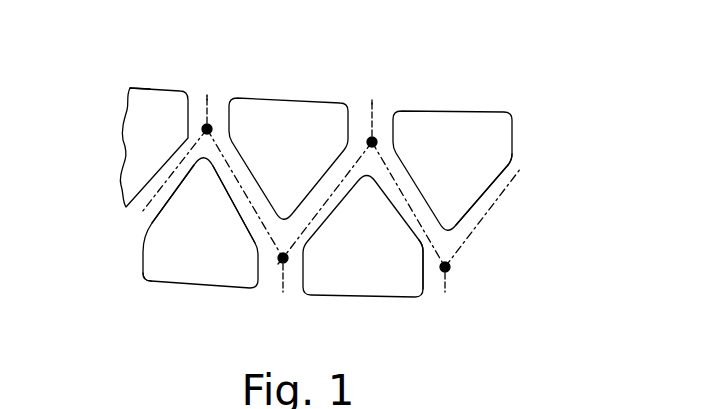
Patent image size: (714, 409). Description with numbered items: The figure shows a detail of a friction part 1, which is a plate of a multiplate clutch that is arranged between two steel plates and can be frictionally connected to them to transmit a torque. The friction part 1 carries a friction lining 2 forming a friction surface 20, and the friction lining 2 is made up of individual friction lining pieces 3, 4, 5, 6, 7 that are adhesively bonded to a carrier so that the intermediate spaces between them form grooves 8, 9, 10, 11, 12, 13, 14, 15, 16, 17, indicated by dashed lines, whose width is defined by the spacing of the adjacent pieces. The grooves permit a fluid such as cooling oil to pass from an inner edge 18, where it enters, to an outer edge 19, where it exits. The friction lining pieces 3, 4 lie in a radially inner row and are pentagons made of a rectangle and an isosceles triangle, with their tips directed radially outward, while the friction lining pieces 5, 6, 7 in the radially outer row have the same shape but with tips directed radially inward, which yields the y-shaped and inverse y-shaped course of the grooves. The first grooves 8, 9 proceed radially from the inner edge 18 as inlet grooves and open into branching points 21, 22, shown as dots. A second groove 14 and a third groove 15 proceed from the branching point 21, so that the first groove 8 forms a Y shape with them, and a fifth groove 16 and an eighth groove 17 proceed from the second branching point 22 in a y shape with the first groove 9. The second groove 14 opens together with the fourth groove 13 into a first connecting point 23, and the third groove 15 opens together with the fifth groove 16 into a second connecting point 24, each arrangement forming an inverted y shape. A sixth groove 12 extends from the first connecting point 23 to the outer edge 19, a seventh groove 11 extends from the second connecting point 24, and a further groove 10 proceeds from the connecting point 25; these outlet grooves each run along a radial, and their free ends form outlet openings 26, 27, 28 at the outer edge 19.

The friction part 1 is at (124, 244).
The friction lining 2 is at (469, 138).
The friction lining piece 3 is at (200, 267).
The friction lining piece 4 is at (333, 277).
The friction lining piece 5 is at (463, 123).
The friction lining piece 6 is at (280, 110).
The friction lining piece 7 is at (162, 105).
The first groove 8 is at (283, 283).
The first groove 9 is at (447, 290).
The groove 10 is at (522, 165).
The seventh groove 11 is at (372, 118).
The sixth groove 12 is at (208, 108).
The fourth groove 13 is at (158, 189).
The second groove 14 is at (247, 195).
The third groove 15 is at (307, 223).
The fifth groove 16 is at (427, 233).
The eighth groove 17 is at (487, 212).
The inner edge 18 is at (138, 293).
The outer edge 19 is at (138, 80).
The friction surface 20 is at (158, 222).
The branching point 21 is at (278, 265).
The branching point 22 is at (450, 270).
The first connecting point 23 is at (200, 128).
The second connecting point 24 is at (377, 140).
The connecting point 25 is at (510, 182).
The outlet opening 26 is at (207, 90).
The outlet opening 27 is at (371, 94).
The outlet opening 28 is at (531, 152).